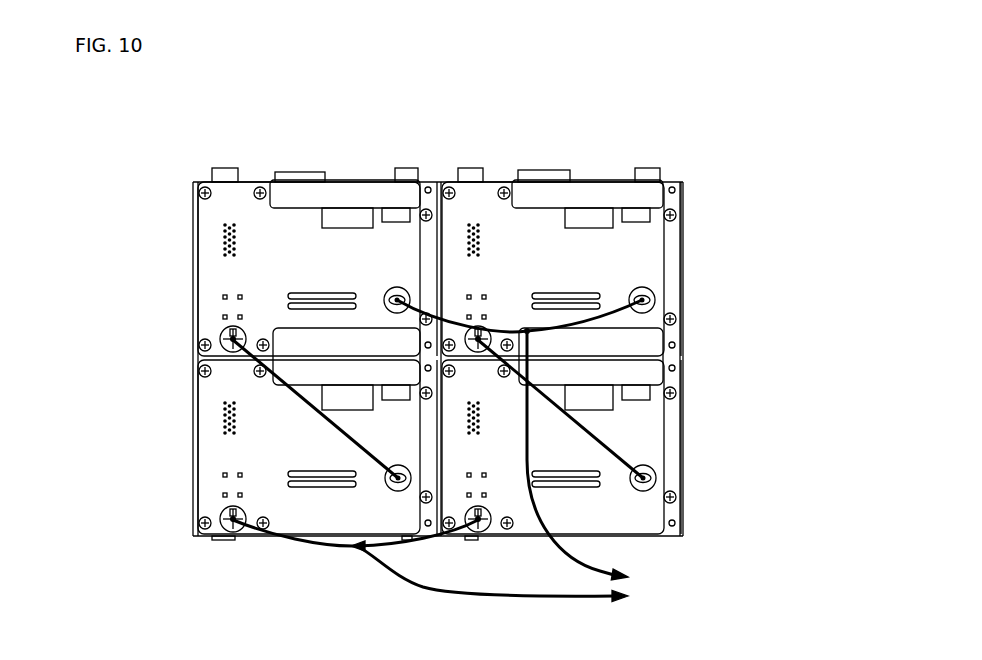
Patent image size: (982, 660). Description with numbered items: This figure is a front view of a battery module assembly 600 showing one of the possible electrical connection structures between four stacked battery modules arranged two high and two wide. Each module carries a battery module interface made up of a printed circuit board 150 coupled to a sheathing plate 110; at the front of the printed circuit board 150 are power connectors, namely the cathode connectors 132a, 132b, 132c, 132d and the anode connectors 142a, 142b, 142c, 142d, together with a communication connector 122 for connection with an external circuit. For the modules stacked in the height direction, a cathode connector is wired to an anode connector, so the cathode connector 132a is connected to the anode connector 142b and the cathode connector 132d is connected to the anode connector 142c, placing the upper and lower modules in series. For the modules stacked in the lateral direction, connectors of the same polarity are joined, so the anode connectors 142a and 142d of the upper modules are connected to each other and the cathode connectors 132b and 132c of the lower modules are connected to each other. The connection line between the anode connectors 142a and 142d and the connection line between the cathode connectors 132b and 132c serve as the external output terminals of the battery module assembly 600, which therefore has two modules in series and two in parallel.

The battery module assembly 600 is at (118, 135).
The sheathing plate 110 is at (683, 195).
The communication connector 122 is at (393, 197).
The printed circuit board 150 is at (668, 246).
The anode connector 142a is at (407, 285).
The anode connector 142b is at (368, 491).
The anode connector 142c is at (668, 468).
The anode connector 142d is at (667, 294).
The cathode connector 132a is at (209, 326).
The cathode connector 132b is at (209, 502).
The cathode connector 132c is at (457, 534).
The cathode connector 132d is at (485, 318).